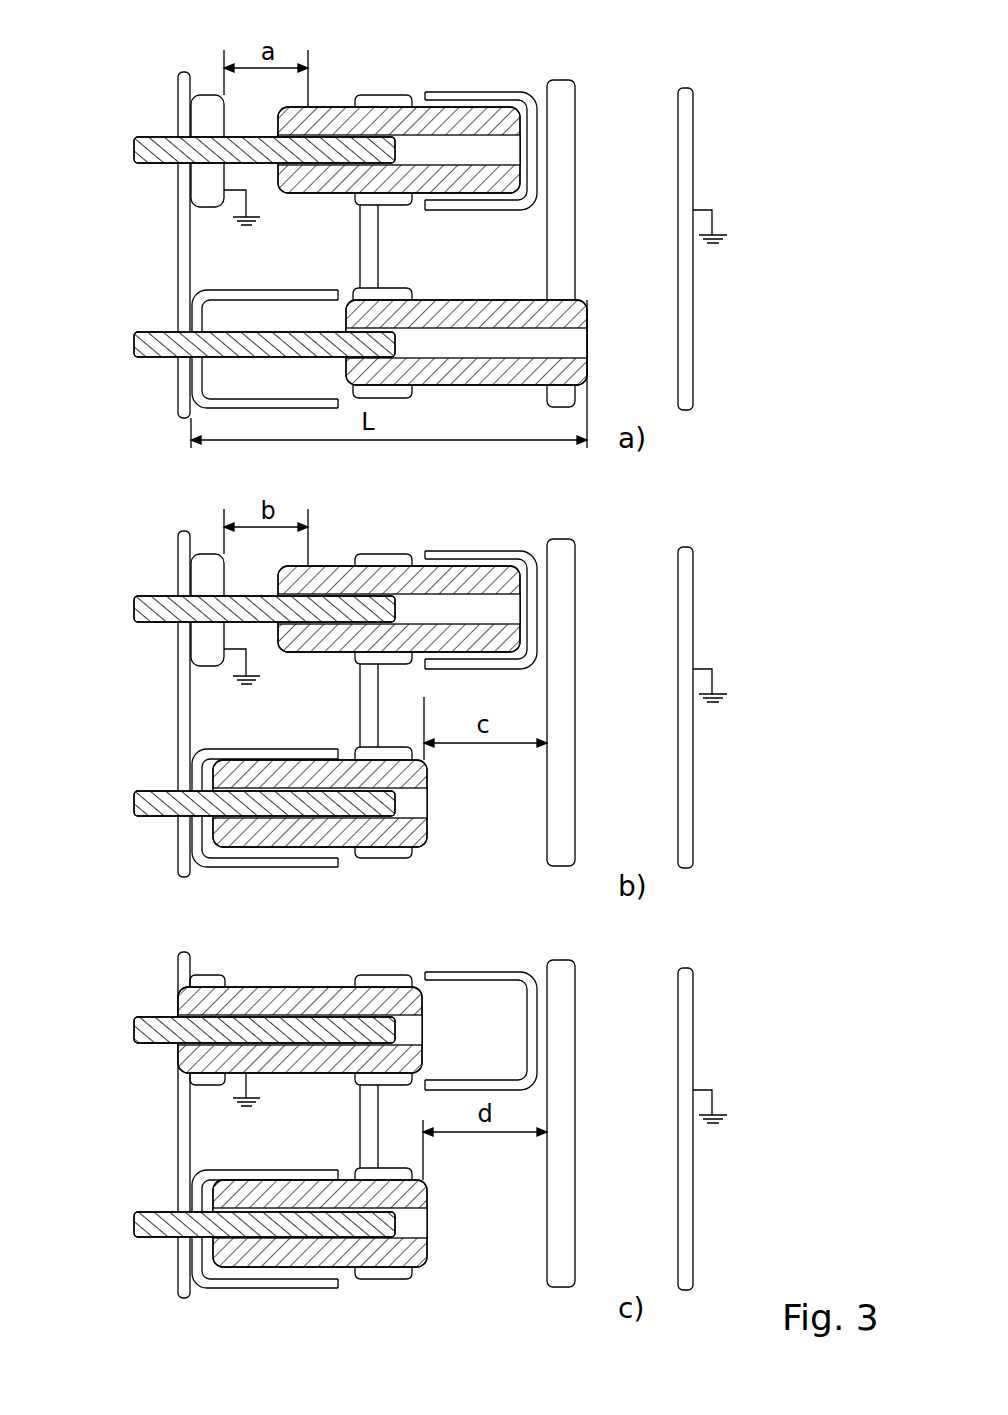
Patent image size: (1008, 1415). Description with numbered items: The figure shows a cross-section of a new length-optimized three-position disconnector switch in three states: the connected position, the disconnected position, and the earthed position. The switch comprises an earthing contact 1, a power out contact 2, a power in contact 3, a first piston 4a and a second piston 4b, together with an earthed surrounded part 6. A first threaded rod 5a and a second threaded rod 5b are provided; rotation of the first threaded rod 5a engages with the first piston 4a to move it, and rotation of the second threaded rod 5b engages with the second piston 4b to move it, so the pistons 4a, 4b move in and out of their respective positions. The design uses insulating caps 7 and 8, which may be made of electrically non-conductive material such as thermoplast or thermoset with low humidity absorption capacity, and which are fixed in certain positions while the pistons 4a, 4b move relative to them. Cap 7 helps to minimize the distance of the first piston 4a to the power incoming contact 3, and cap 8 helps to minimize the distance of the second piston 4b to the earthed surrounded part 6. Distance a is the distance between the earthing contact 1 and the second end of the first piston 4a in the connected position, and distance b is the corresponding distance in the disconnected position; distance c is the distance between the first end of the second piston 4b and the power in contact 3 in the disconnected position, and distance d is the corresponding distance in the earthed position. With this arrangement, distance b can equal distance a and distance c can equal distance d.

The earthing contact 1 is at (206, 100).
The earthed surrounded part 6 is at (183, 262).
The power out contact 2 is at (368, 237).
The power in contact 3 is at (572, 247).
The first piston 4a is at (328, 117).
The second piston 4b is at (450, 380).
The first threaded rod 5a is at (150, 140).
The second threaded rod 5b is at (150, 333).
The insulating cap 7 is at (490, 93).
The insulating cap 8 is at (266, 290).